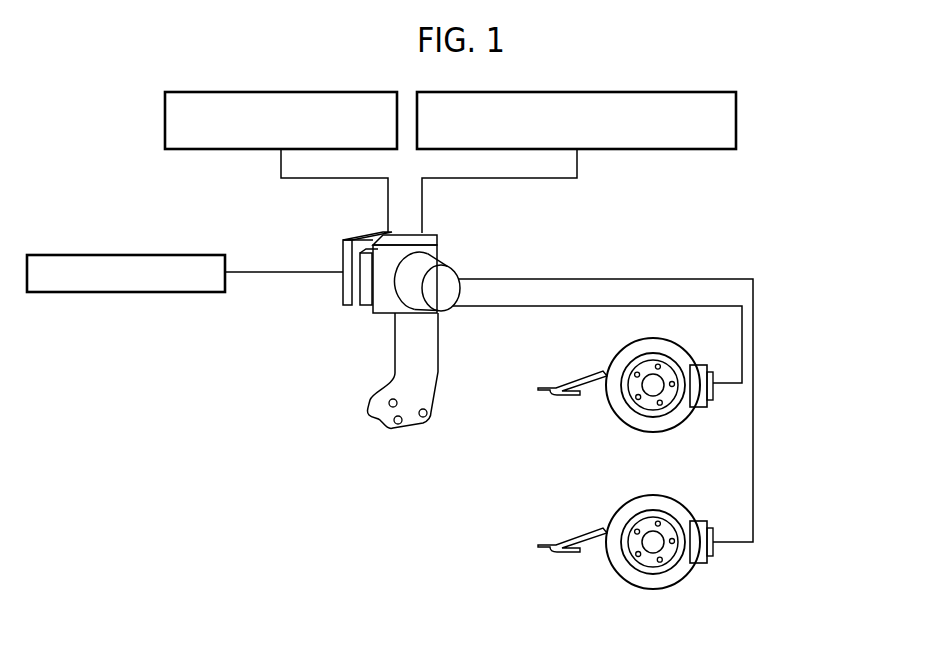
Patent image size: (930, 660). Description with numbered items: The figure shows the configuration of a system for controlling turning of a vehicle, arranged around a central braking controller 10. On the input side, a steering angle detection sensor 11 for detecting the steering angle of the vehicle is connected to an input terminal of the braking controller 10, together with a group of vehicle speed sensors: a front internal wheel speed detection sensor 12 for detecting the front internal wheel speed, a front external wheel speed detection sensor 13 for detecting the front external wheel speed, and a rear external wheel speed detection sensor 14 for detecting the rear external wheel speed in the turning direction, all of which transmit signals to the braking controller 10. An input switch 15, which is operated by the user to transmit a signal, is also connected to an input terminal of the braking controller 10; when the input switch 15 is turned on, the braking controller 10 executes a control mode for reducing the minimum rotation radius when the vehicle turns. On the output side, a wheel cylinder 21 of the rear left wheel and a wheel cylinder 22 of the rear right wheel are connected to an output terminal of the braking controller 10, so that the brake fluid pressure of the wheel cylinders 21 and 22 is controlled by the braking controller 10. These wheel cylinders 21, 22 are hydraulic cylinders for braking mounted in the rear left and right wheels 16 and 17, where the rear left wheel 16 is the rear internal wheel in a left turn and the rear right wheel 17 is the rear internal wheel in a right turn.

The braking controller 10 is at (372, 306).
The steering angle detection sensor 11 is at (165, 116).
The front internal wheel speed detection sensor 12 is at (658, 120).
The front external wheel speed detection sensor 13 is at (658, 120).
The rear external wheel speed detection sensor 14 is at (736, 120).
The input switch 15 is at (118, 255).
The rear left wheel 16 is at (622, 511).
The rear right wheel 17 is at (622, 353).
The wheel cylinder of rear left wheel 21 is at (702, 530).
The wheel cylinder of rear right wheel 22 is at (700, 372).